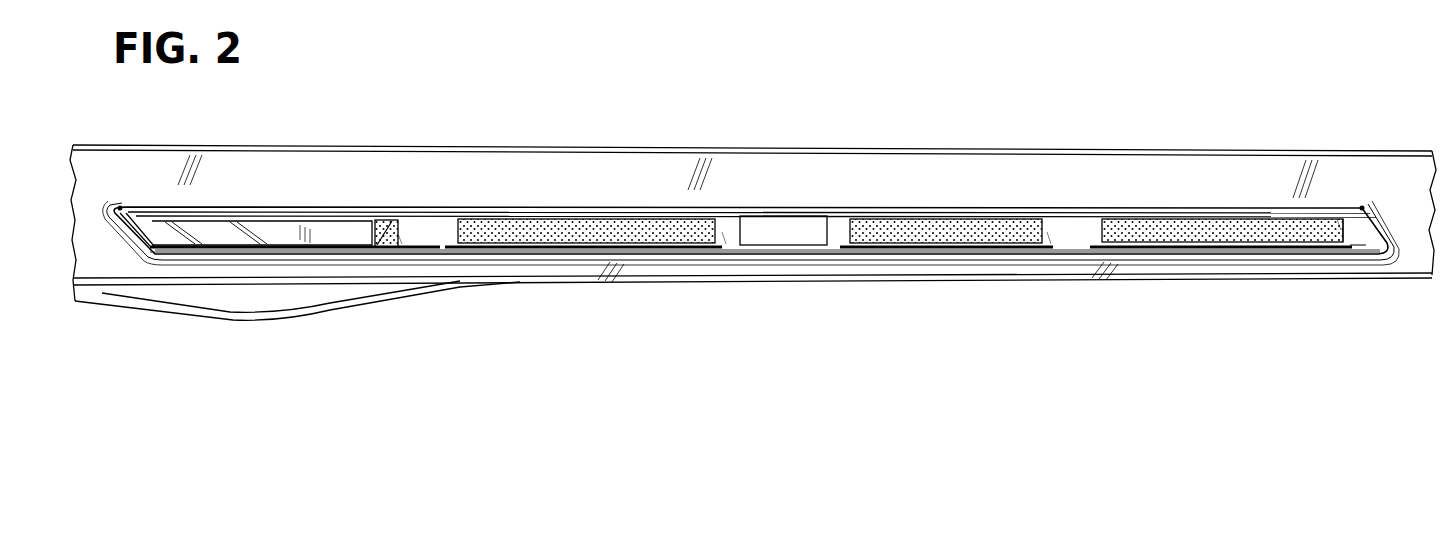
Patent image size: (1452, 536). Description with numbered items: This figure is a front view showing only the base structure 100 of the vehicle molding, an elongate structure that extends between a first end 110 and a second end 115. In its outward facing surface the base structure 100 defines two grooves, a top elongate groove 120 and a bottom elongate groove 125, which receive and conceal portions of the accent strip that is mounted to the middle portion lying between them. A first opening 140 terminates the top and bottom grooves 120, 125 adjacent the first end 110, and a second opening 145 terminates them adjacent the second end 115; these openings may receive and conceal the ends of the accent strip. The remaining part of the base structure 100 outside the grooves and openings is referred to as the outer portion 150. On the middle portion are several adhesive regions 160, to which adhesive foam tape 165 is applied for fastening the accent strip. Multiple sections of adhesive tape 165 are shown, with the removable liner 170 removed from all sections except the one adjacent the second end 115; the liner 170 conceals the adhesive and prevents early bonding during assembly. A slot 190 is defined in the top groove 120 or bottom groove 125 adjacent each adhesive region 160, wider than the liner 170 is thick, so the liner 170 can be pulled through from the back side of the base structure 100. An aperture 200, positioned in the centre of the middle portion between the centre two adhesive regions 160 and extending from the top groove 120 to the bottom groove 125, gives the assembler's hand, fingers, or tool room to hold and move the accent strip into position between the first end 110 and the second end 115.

The base structure 100 is at (1155, 177).
The first end 110 is at (1383, 296).
The second end 115 is at (122, 318).
The top elongate groove 120 is at (1073, 208).
The bottom elongate groove 125 is at (1323, 247).
The first opening 140 is at (1362, 206).
The second opening 145 is at (120, 206).
The outer portion 150 is at (232, 303).
The adhesive regions 160 is at (399, 238).
The adhesive foam tape 165 is at (390, 216).
The removable liner 170 is at (260, 230).
The slot 190 is at (333, 249).
The aperture 200 is at (778, 231).